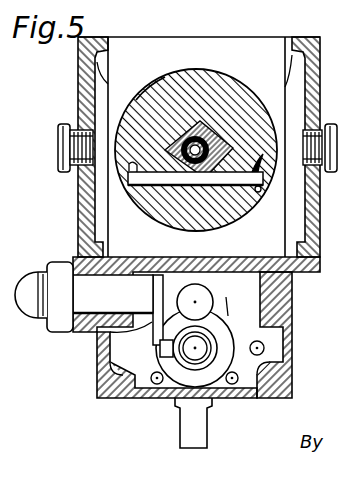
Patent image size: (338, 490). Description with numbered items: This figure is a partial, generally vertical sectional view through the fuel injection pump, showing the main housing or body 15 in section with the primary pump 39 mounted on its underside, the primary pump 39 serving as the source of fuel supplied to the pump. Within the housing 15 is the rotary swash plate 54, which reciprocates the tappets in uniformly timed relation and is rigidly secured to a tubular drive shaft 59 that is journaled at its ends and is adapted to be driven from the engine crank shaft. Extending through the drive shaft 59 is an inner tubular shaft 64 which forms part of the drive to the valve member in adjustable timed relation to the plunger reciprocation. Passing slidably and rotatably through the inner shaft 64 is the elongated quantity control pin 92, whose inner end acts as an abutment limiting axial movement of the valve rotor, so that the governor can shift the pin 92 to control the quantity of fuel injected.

The main housing 15 is at (77, 198).
The primary pump 39 is at (92, 357).
The rotary swash plate 54 is at (231, 92).
The tubular drive shaft 59 is at (152, 104).
The inner tubular shaft 64 is at (219, 139).
The quantity control pin 92 is at (208, 132).